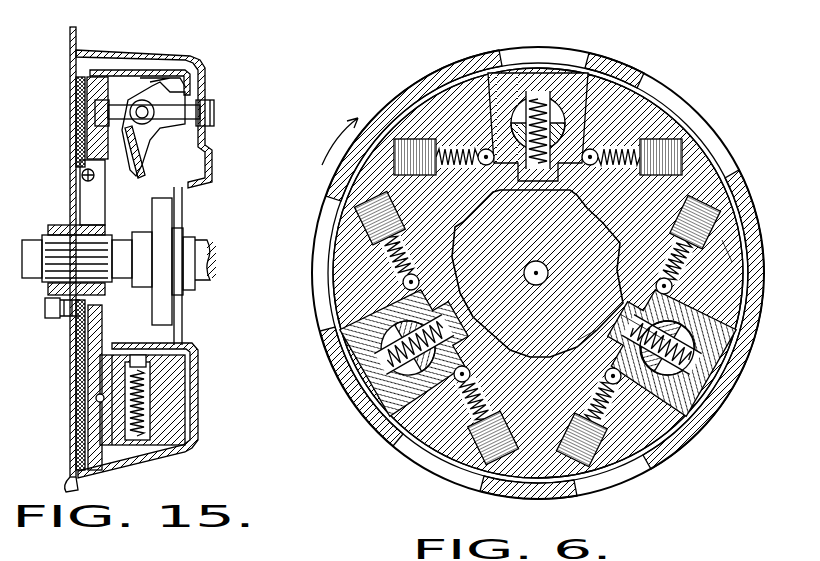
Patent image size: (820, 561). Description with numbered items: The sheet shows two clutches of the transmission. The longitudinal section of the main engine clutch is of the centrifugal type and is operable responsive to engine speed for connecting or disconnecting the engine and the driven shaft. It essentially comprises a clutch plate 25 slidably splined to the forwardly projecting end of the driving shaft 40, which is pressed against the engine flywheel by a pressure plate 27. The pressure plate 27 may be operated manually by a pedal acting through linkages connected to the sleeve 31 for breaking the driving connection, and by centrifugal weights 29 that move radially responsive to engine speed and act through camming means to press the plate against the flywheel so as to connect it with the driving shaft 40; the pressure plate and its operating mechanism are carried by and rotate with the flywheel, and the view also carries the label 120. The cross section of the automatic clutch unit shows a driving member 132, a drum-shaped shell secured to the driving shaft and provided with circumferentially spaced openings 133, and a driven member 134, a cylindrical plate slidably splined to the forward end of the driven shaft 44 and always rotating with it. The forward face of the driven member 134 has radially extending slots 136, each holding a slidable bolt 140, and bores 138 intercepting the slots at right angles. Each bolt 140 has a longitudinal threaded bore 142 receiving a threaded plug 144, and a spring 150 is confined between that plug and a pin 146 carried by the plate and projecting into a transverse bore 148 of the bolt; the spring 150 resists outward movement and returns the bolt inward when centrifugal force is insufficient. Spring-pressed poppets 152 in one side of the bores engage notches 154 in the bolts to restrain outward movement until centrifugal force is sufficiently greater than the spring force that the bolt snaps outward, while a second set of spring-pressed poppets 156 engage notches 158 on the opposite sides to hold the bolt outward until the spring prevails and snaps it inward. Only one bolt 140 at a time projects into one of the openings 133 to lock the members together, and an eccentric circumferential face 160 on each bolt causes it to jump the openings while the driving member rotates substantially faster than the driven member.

In FIG. 15, the clutch plate 25 is at (68, 118).
In FIG. 15, the pressure plate 27 is at (113, 73).
In FIG. 15, the centrifugal weights 29 is at (220, 392).
In FIG. 15, the sleeve 31 is at (162, 223).
In FIG. 15, the driving shaft 40 is at (213, 242).
In FIG. 6, the driven shaft 44 is at (538, 300).
In FIG. 6, the clutch assembly 120 is at (296, 540).
In FIG. 6, the driving member 132 is at (643, 80).
In FIG. 6, the openings 133 is at (722, 165).
In FIG. 6, the driven member 134 is at (622, 405).
In FIG. 6, the slots 136 is at (312, 338).
In FIG. 6, the bores 138 is at (453, 147).
In FIG. 6, the bolt 140 is at (690, 365).
In FIG. 6, the threaded bore 142 is at (588, 332).
In FIG. 6, the threaded plug 144 is at (705, 325).
In FIG. 6, the pin 146 is at (700, 395).
In FIG. 6, the transverse bore 148 is at (685, 345).
In FIG. 6, the spring 150 is at (650, 430).
In FIG. 6, the spring-pressed poppets 152 is at (612, 400).
In FIG. 6, the notches 154 is at (650, 460).
In FIG. 6, the second set of spring-pressed poppets 156 is at (727, 237).
In FIG. 6, the notches 158 is at (735, 260).
In FIG. 6, the eccentric circumferential face 160 is at (512, 67).